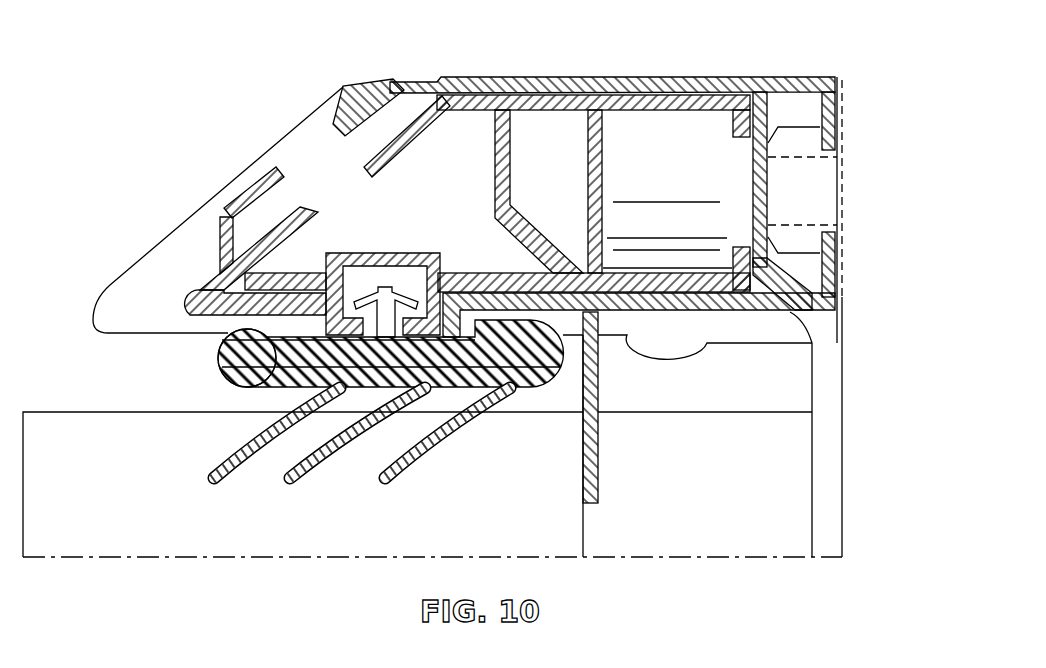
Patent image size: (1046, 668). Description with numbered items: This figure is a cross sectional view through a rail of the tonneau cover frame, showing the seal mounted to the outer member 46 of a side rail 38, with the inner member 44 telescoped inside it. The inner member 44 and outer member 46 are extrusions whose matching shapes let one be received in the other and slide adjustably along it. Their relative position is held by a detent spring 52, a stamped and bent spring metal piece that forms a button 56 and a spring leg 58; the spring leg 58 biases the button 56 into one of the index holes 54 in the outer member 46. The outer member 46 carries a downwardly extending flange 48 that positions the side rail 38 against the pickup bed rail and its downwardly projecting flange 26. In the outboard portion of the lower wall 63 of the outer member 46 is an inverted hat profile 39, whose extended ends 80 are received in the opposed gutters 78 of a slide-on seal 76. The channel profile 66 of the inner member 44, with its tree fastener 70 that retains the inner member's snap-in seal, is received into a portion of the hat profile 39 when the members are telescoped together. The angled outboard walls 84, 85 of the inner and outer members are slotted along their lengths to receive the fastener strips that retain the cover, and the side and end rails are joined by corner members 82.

The downwardly projecting flange 26 is at (583, 535).
The side rail 38 is at (216, 527).
The inverted hat profile 39 is at (234, 354).
The inner member 44 is at (634, 94).
The outer member 46 is at (545, 76).
The flange 48 is at (598, 395).
The detent spring 52 is at (712, 192).
The index holes 54 is at (712, 298).
The button 56 is at (680, 342).
The spring leg 58 is at (680, 125).
The lower wall 63 is at (475, 288).
The channel profile 66 is at (336, 327).
The tree fastener 70 is at (378, 290).
The slide-on seal 76 is at (218, 374).
The gutters 78 is at (230, 326).
The extended ends 80 is at (268, 360).
The corner member 82 is at (147, 247).
The angled outboard wall 84 is at (401, 128).
The angled outboard wall 85 is at (357, 110).